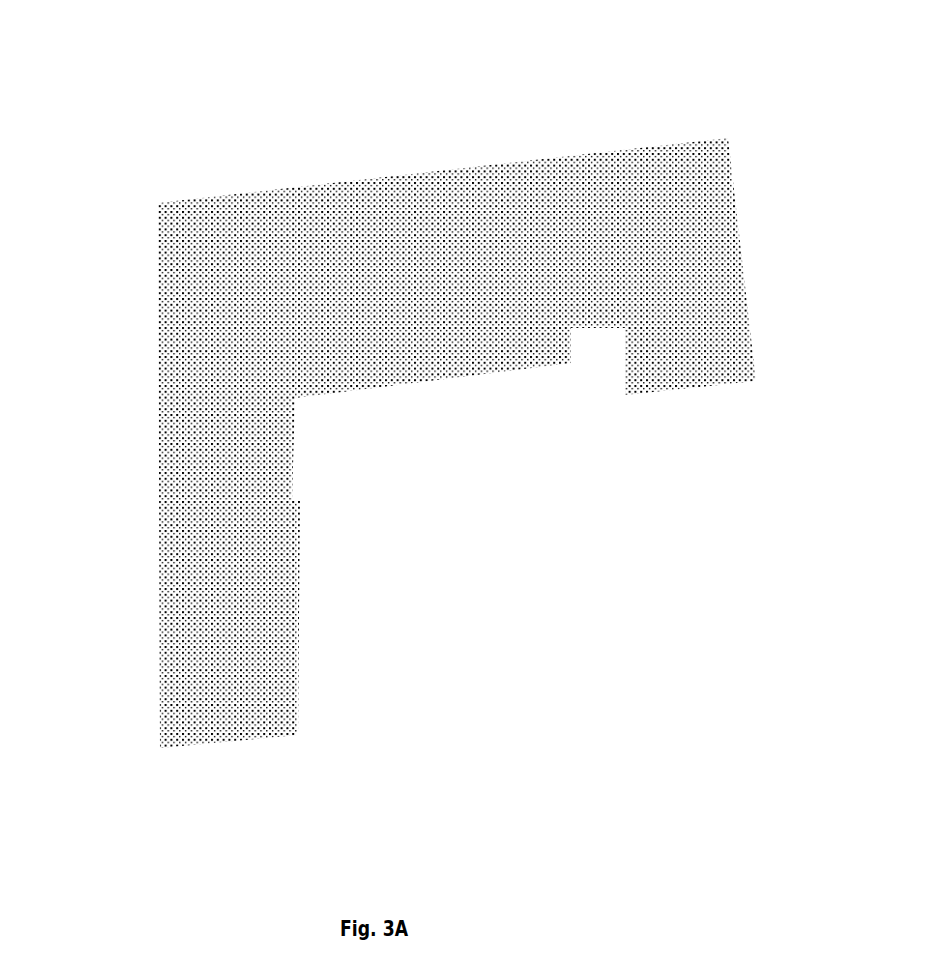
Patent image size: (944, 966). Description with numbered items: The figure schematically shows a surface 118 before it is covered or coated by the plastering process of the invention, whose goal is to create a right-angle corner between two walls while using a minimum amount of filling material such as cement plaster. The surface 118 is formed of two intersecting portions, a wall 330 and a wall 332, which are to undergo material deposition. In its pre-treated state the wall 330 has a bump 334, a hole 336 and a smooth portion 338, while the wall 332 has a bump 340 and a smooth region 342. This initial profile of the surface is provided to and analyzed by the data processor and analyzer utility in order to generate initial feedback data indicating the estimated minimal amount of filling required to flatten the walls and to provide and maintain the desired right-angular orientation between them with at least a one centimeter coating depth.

The surface 118 is at (247, 147).
The wall 330 is at (547, 145).
The wall 332 is at (150, 420).
The bump 334 is at (675, 385).
The hole 336 is at (585, 343).
The smooth portion 338 is at (345, 385).
The bump 340 is at (298, 647).
The smooth region 342 is at (292, 445).